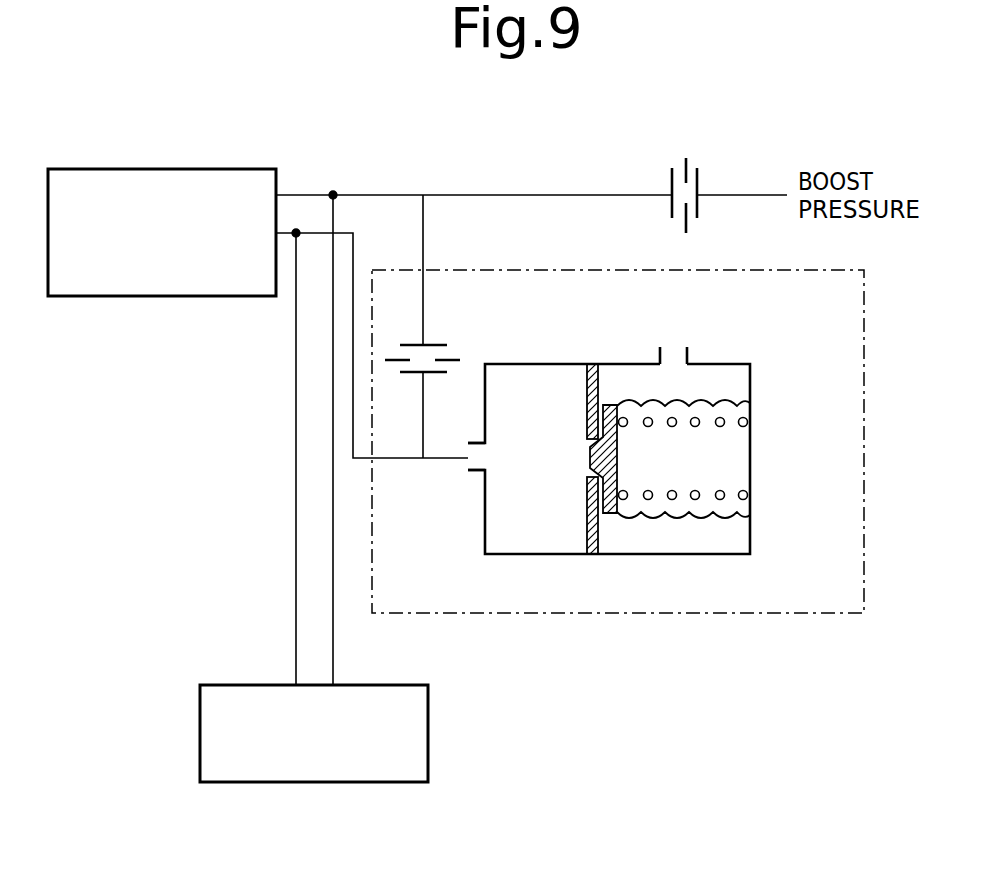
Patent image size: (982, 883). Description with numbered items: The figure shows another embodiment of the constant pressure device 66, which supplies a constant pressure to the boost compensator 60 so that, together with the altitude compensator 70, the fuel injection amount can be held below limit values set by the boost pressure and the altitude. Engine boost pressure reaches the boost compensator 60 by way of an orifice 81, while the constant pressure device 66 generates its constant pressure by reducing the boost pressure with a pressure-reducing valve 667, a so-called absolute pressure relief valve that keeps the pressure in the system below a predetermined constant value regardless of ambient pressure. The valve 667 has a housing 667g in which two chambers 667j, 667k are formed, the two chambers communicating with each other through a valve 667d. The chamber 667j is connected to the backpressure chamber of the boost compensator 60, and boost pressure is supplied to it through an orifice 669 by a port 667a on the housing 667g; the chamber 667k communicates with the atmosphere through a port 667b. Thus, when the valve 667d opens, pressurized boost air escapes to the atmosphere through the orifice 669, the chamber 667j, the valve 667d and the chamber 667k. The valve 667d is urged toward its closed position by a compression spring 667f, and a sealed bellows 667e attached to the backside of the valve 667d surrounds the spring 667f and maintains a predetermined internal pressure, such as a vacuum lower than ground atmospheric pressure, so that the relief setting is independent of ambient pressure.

The boost compensator 60 is at (132, 169).
The altitude compensator 70 is at (300, 783).
The orifice 81 is at (690, 160).
The constant pressure device 66 is at (707, 616).
The orifice 669 is at (448, 353).
The pressure-reducing valve 667 is at (622, 352).
The port 667a is at (468, 462).
The port 667b is at (672, 350).
The valve 667d is at (603, 456).
The bellows 667e is at (745, 403).
The compression spring 667f is at (722, 425).
The housing 667g is at (546, 363).
The chamber 667j is at (568, 515).
The chamber 667k is at (697, 549).